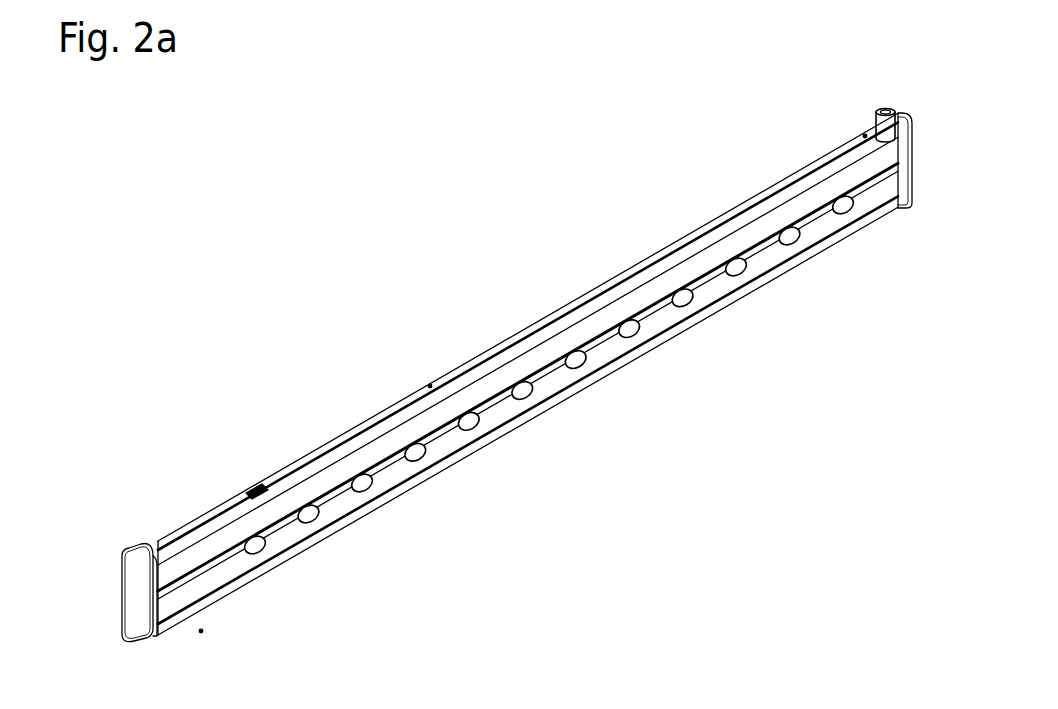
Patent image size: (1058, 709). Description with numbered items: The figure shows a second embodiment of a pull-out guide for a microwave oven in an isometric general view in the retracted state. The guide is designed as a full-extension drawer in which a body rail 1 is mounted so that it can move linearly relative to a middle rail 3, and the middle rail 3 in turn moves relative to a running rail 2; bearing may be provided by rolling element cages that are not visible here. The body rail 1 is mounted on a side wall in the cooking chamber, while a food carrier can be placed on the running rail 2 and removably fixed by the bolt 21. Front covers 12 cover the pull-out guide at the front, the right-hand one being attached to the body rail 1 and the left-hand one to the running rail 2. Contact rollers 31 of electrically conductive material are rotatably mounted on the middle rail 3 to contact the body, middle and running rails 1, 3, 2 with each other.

The body rail 1 is at (672, 330).
The running rail 2 is at (200, 545).
The middle rail 3 is at (396, 467).
The contact rollers 31 is at (580, 368).
The front covers 12 is at (140, 578).
The bolt 21 is at (880, 108).